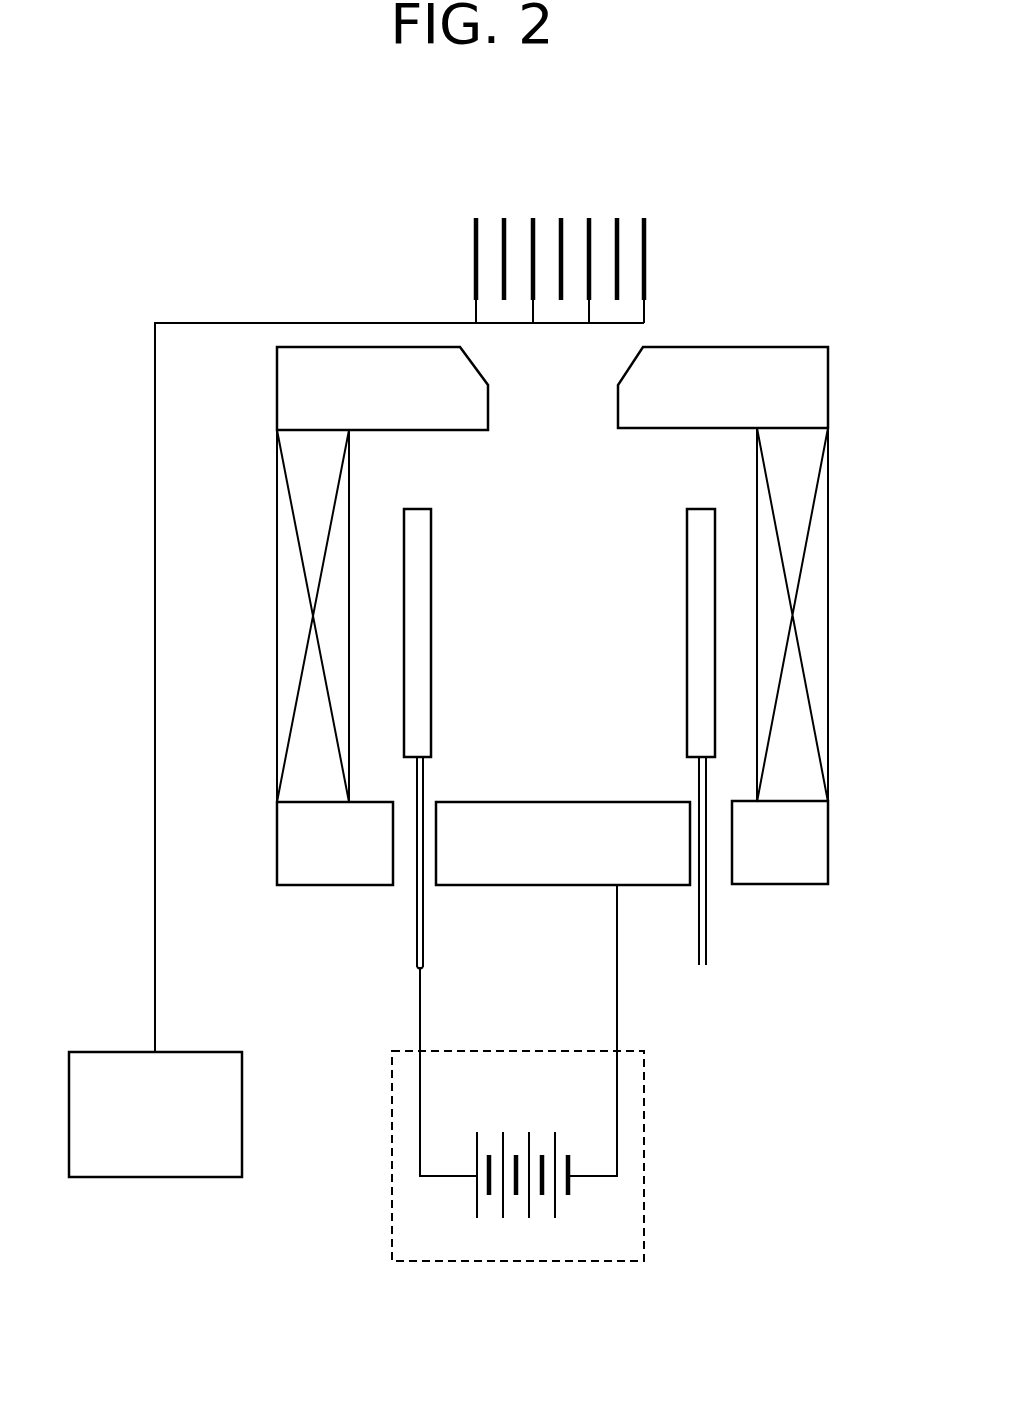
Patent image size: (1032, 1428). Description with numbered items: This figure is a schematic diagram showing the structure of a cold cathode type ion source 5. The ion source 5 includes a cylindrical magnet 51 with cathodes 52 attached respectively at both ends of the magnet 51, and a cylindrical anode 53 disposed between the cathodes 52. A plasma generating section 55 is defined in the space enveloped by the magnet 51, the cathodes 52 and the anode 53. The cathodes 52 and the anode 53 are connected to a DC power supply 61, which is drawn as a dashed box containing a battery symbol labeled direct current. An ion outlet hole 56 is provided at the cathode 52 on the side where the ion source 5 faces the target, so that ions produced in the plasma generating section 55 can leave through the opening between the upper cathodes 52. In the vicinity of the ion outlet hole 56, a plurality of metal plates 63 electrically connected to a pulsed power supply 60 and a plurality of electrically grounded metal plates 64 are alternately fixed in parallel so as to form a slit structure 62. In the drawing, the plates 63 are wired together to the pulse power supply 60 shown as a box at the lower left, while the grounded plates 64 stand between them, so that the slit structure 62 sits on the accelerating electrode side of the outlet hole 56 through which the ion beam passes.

The ion source 5 is at (803, 273).
The cylindrical magnet 51 is at (817, 633).
The cathodes 52 is at (817, 382).
The cylindrical anode 53 is at (715, 728).
The plasma generating section 55 is at (580, 520).
The ion outlet hole 56 is at (587, 375).
The pulsed power supply 60 is at (202, 1178).
The DC power supply 61 is at (435, 1262).
The slit structure 62 is at (460, 239).
The metal plates 63 is at (474, 218).
The electrically grounded metal plates 64 is at (504, 218).